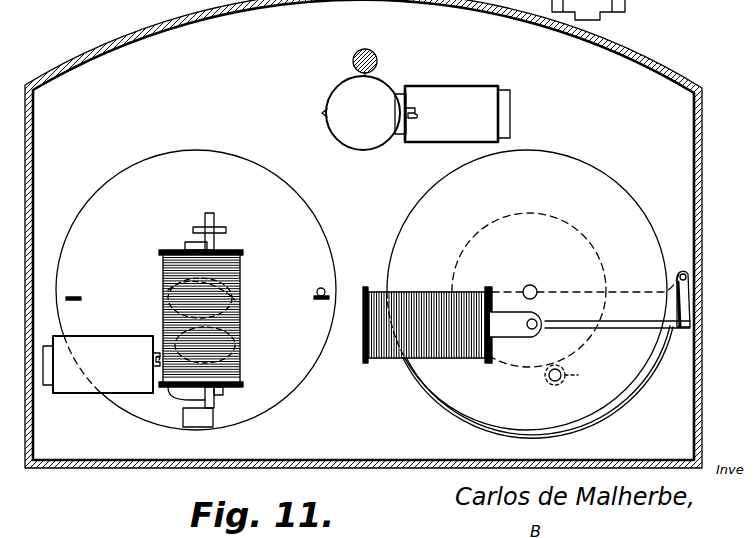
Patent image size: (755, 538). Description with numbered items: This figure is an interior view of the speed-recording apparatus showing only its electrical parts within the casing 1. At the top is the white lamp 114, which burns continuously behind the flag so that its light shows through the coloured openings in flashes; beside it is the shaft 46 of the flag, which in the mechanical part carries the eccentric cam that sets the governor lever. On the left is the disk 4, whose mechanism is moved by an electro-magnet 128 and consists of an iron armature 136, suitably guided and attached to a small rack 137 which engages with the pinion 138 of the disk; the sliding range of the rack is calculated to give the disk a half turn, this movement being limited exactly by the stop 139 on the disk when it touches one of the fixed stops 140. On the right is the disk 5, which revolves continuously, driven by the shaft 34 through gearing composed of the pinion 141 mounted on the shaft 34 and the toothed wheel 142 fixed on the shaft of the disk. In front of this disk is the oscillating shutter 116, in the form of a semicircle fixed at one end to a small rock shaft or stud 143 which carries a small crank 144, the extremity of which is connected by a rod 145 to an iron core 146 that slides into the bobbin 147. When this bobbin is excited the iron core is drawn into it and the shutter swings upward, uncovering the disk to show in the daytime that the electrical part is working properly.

The casing 1 is at (172, 22).
The disk 4 is at (117, 176).
The disk 5 is at (626, 189).
The shaft 34 is at (549, 383).
The shaft of the flag 46 is at (377, 55).
The white lamp 114 is at (331, 99).
The oscillating shutter 116 is at (460, 416).
The electro-magnet 128 is at (241, 293).
The iron armature 136 is at (200, 427).
The small rack 137 is at (239, 310).
The pinion 138 is at (160, 297).
The stop 139 is at (322, 288).
The fixed stop 140 is at (75, 296).
The pinion 141 is at (572, 376).
The toothed wheel 142 is at (601, 260).
The rock shaft 143 is at (684, 271).
The small crank 144 is at (687, 305).
The rod 145 is at (626, 330).
The iron core 146 is at (539, 318).
The bobbin 147 is at (381, 363).